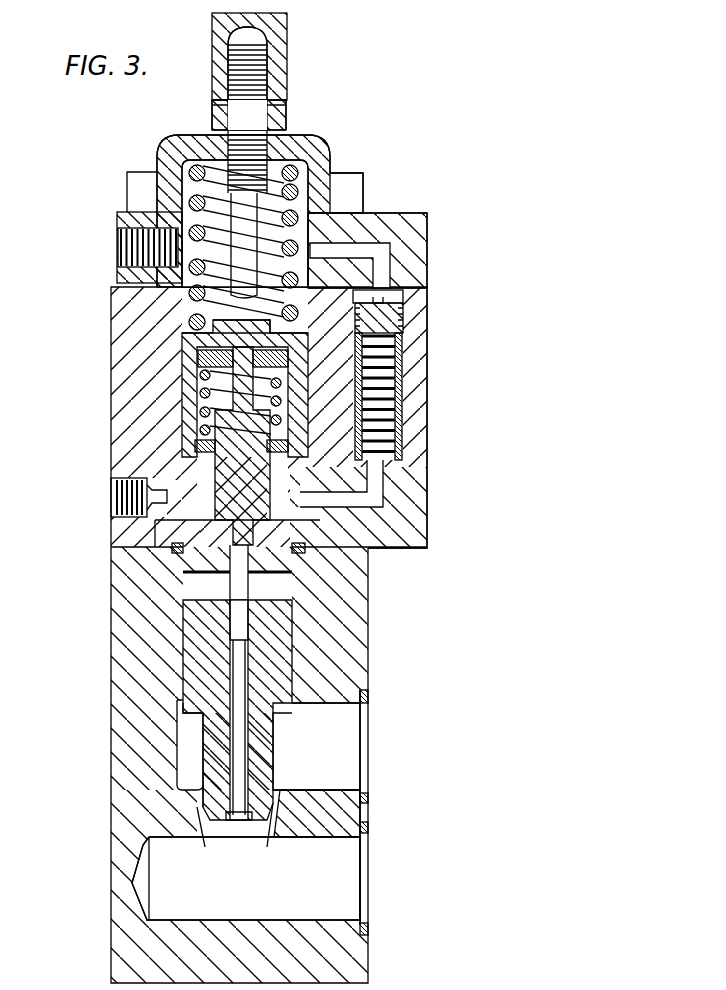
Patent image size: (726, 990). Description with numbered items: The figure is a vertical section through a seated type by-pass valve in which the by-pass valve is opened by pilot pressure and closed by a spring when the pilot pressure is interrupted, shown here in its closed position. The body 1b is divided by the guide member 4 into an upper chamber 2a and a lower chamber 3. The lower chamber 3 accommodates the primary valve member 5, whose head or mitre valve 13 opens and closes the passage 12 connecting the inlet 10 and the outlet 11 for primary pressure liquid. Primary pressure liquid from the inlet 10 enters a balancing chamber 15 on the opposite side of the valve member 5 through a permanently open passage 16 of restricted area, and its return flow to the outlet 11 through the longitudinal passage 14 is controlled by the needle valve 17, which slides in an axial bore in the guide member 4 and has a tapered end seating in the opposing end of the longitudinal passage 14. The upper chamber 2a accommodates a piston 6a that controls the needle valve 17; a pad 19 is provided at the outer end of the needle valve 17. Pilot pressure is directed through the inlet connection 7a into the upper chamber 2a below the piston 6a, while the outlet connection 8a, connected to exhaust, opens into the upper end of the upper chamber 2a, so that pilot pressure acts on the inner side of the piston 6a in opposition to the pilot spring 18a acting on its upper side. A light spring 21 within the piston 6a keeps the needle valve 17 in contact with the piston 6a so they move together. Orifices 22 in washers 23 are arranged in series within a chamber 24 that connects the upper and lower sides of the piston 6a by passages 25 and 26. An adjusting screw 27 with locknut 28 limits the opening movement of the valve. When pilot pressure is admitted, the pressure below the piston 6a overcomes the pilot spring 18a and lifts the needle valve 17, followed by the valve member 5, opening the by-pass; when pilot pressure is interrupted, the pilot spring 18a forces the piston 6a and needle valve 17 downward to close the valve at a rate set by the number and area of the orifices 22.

The body 1b is at (120, 750).
The upper chamber 2a is at (195, 315).
The lower chamber 3 is at (183, 547).
The guide member 4 is at (427, 533).
The valve member 5 is at (286, 627).
The piston 6a is at (185, 408).
The inlet connection 7a is at (130, 492).
The outlet connection 8a is at (130, 248).
The inlet 10 is at (345, 735).
The outlet 11 is at (340, 897).
The passage 12 is at (340, 843).
The mitre valve 13 is at (330, 792).
The longitudinal passage 14 is at (242, 673).
The balancing chamber 15 is at (182, 568).
The passage of restricted area 16 is at (183, 663).
The needle valve 17 is at (248, 590).
The pilot spring 18a is at (300, 190).
The pad 19 is at (188, 347).
The light spring 21 is at (193, 428).
The orifices 22 is at (380, 322).
The washers 23 is at (400, 362).
The chamber 24 is at (405, 408).
The passage 25 is at (358, 250).
The passage 26 is at (377, 497).
The adjusting screw 27 is at (287, 115).
The locknut 28 is at (288, 68).